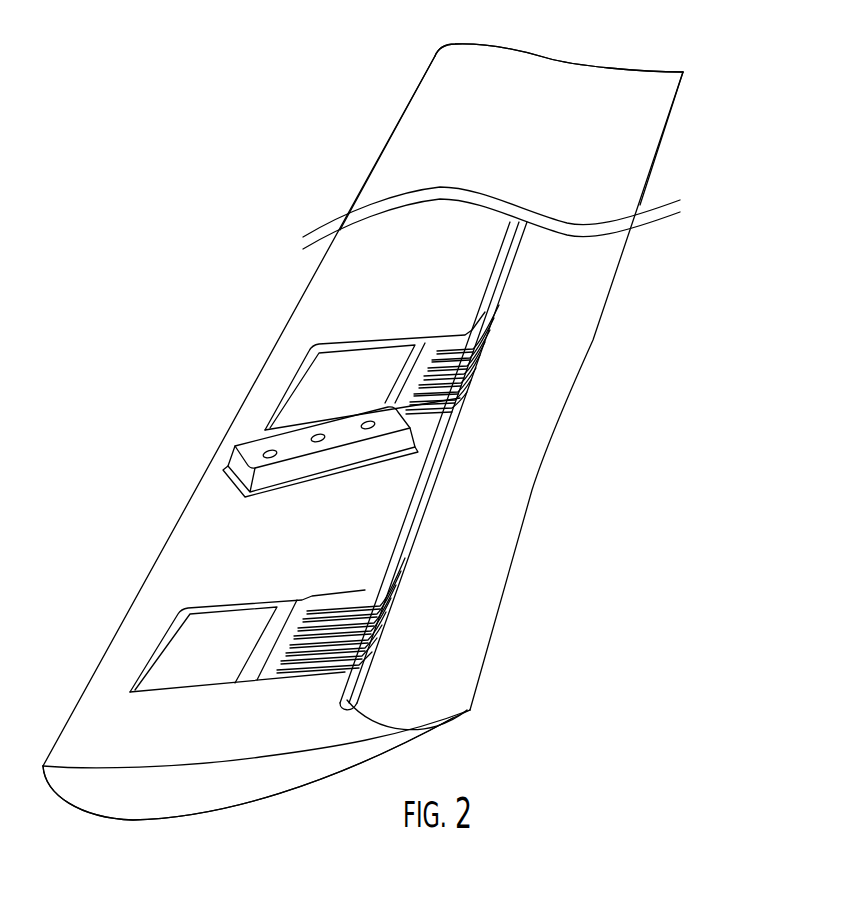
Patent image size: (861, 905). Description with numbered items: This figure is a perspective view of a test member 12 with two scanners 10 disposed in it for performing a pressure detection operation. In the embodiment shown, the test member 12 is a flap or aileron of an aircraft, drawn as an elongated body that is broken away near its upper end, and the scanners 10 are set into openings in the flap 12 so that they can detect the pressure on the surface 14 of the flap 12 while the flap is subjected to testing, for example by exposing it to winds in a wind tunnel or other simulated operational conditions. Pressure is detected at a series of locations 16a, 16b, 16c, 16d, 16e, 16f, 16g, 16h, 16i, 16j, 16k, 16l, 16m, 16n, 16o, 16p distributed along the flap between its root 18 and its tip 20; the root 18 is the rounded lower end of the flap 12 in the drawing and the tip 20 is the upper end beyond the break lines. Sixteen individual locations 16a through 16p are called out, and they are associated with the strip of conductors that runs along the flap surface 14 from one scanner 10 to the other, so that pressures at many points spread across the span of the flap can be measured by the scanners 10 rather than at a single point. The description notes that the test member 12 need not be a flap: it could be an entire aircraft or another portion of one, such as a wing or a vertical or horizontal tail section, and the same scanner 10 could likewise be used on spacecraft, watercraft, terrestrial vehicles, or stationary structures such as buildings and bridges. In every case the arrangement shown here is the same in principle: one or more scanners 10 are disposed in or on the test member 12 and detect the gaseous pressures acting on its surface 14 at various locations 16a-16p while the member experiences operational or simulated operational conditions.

The scanner 10 is at (322, 380).
The test member 12 is at (203, 482).
The surface 14 is at (222, 548).
The location 16a is at (420, 731).
The location 16b is at (370, 667).
The location 16c is at (373, 653).
The location 16d is at (380, 637).
The location 16e is at (397, 580).
The location 16f is at (400, 570).
The location 16g is at (403, 562).
The location 16h is at (400, 557).
The location 16i is at (443, 437).
The location 16j is at (460, 415).
The location 16k is at (467, 410).
The location 16l is at (470, 393).
The location 16m is at (490, 337).
The location 16n is at (490, 325).
The location 16o is at (487, 322).
The location 16p is at (485, 315).
The root 18 is at (212, 793).
The tip 20 is at (525, 50).